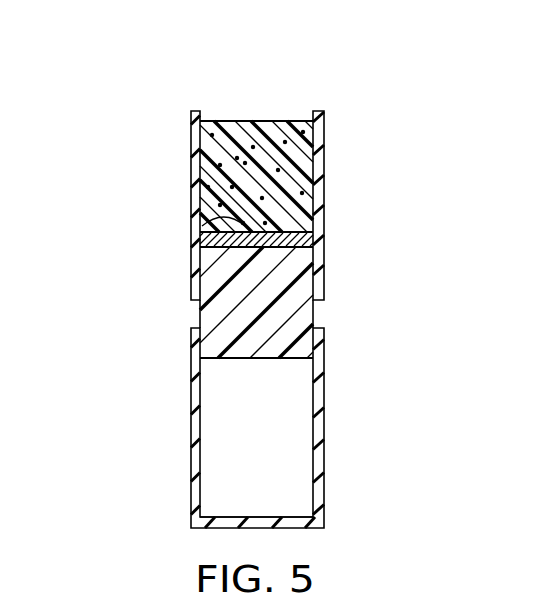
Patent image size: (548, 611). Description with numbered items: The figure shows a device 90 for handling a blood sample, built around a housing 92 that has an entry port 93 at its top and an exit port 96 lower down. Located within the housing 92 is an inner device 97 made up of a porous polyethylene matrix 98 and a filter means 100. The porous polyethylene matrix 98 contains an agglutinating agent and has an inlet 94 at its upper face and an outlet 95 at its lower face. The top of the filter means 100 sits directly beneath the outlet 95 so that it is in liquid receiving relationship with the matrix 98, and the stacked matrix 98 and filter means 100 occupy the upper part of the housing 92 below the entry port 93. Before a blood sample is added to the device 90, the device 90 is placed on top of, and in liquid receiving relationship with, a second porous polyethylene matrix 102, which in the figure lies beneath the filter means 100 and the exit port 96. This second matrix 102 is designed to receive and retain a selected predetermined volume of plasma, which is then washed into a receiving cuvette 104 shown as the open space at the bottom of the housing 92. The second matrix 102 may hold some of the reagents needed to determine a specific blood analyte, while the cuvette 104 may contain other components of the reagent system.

The device 90 is at (180, 184).
The housing 92 is at (188, 209).
The entry port 93 is at (222, 111).
The inlet 94 is at (265, 122).
The outlet 95 is at (191, 244).
The exit port 96 is at (232, 247).
The device 97 is at (341, 146).
The porous polyethylene matrix 98 is at (300, 184).
The filter means 100 is at (297, 232).
The second porous polyethylene matrix 102 is at (287, 316).
The receiving cuvette 104 is at (287, 437).